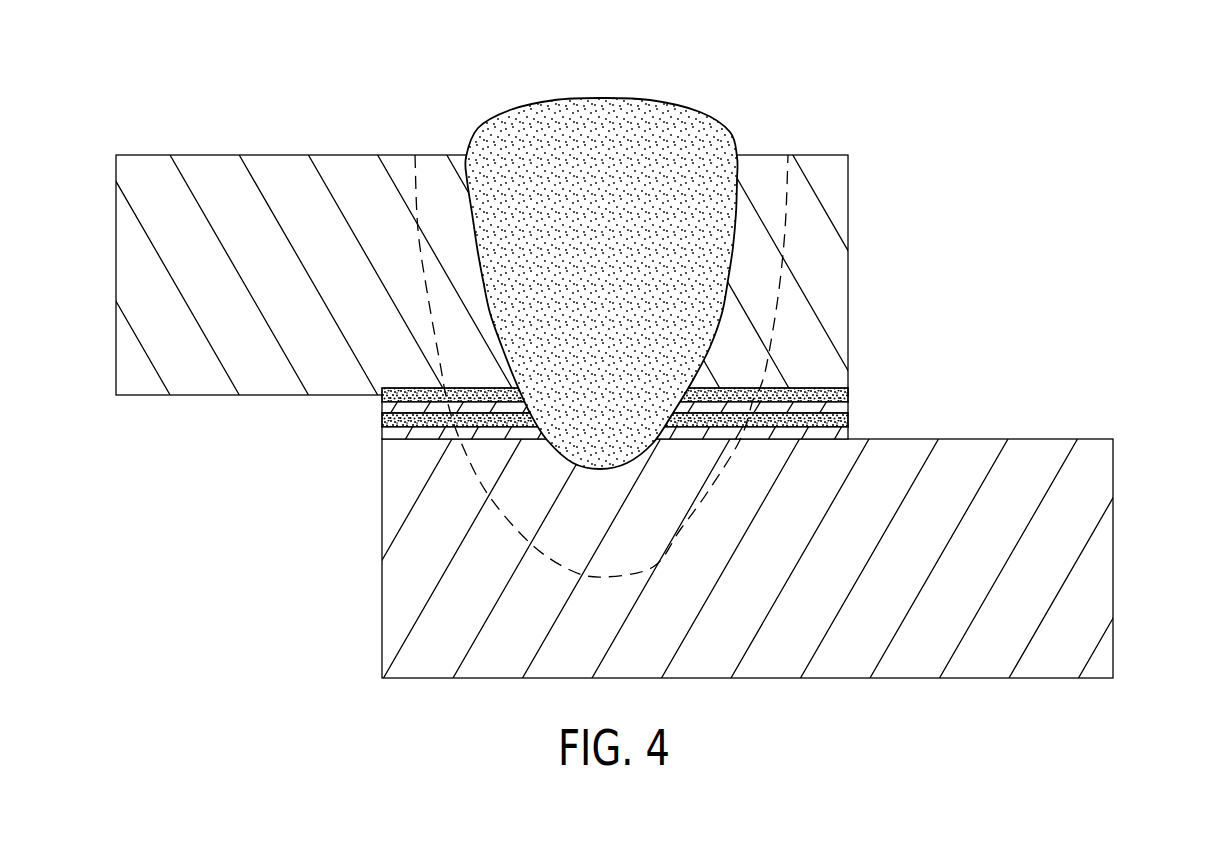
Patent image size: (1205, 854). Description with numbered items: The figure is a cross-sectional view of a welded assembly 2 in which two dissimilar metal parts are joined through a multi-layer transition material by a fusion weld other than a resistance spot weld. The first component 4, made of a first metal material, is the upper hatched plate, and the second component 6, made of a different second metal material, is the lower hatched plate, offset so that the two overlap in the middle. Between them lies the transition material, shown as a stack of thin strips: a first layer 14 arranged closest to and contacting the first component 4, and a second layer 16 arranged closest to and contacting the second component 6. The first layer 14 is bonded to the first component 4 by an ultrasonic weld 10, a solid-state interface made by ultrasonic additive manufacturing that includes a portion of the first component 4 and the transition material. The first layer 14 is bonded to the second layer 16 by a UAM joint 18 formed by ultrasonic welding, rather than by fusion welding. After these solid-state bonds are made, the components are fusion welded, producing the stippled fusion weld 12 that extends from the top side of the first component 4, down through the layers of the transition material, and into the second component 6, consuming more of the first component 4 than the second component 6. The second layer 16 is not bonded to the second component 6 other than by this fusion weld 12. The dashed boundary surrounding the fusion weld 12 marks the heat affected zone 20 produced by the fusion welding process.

The welded assembly 2 is at (164, 78).
The first component 4 is at (152, 193).
The second component 6 is at (1078, 607).
The ultrasonic weld 10 is at (817, 390).
The fusion weld 12 is at (640, 138).
The first layer 14 is at (400, 407).
The second layer 16 is at (400, 434).
The UAM joint 18 is at (848, 422).
The heat affected zone 20 is at (413, 170).